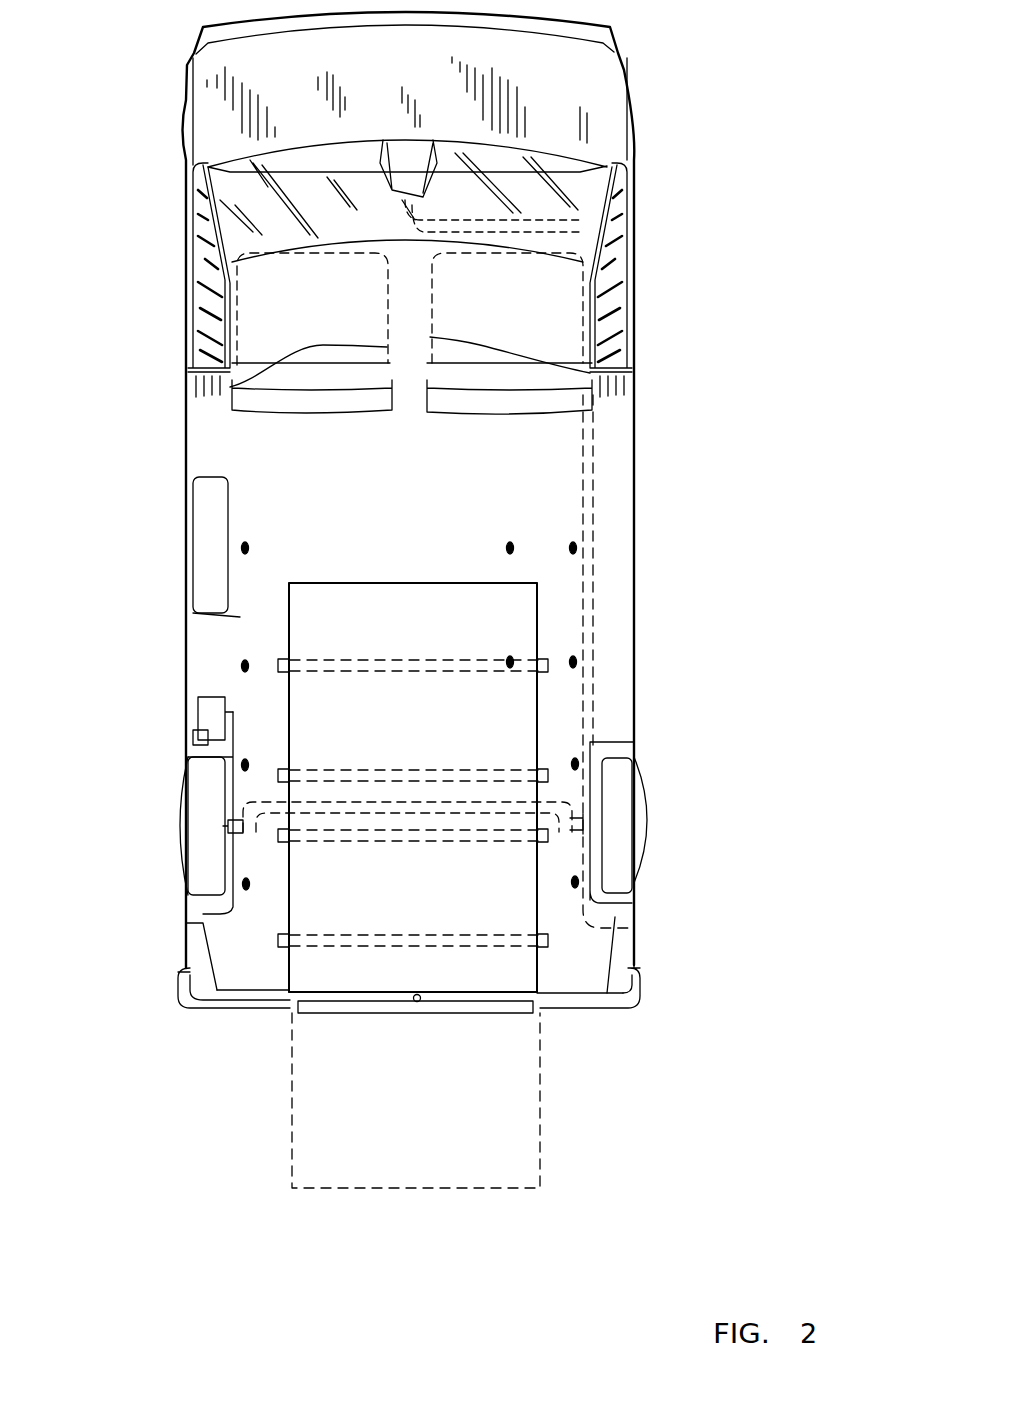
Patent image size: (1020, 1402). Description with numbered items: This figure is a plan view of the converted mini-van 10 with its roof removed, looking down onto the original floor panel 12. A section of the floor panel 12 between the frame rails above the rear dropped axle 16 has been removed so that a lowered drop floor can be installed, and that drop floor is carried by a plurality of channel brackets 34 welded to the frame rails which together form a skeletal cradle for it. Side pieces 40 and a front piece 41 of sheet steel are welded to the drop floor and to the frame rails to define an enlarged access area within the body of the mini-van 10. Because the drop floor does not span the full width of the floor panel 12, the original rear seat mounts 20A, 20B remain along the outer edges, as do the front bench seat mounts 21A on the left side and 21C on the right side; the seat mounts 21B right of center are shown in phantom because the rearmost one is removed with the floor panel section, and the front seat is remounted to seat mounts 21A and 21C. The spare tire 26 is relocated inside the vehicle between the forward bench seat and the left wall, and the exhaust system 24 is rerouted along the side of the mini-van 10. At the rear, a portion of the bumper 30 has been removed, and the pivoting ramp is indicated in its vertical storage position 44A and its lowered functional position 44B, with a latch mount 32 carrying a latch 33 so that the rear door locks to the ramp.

The mini-van 10 is at (700, 273).
The floor panel 12 is at (567, 602).
The rear dropped axle 16 is at (567, 832).
The seat mount 20A is at (243, 765).
The seat mount 20B is at (246, 890).
The seat mount 21A is at (242, 548).
The seat mount 21B is at (507, 547).
The seat mount 21C is at (573, 545).
The exhaust system 24 is at (530, 225).
The spare tire 26 is at (207, 497).
The bumper 30 is at (242, 1008).
The latch mount 32 is at (342, 1013).
The latch 33 is at (417, 1003).
The channel brackets 34 is at (427, 773).
The side pieces 40 is at (289, 620).
The front piece 41 is at (343, 583).
The storage position of ramp 44A is at (477, 990).
The functional position of ramp 44B is at (463, 1128).